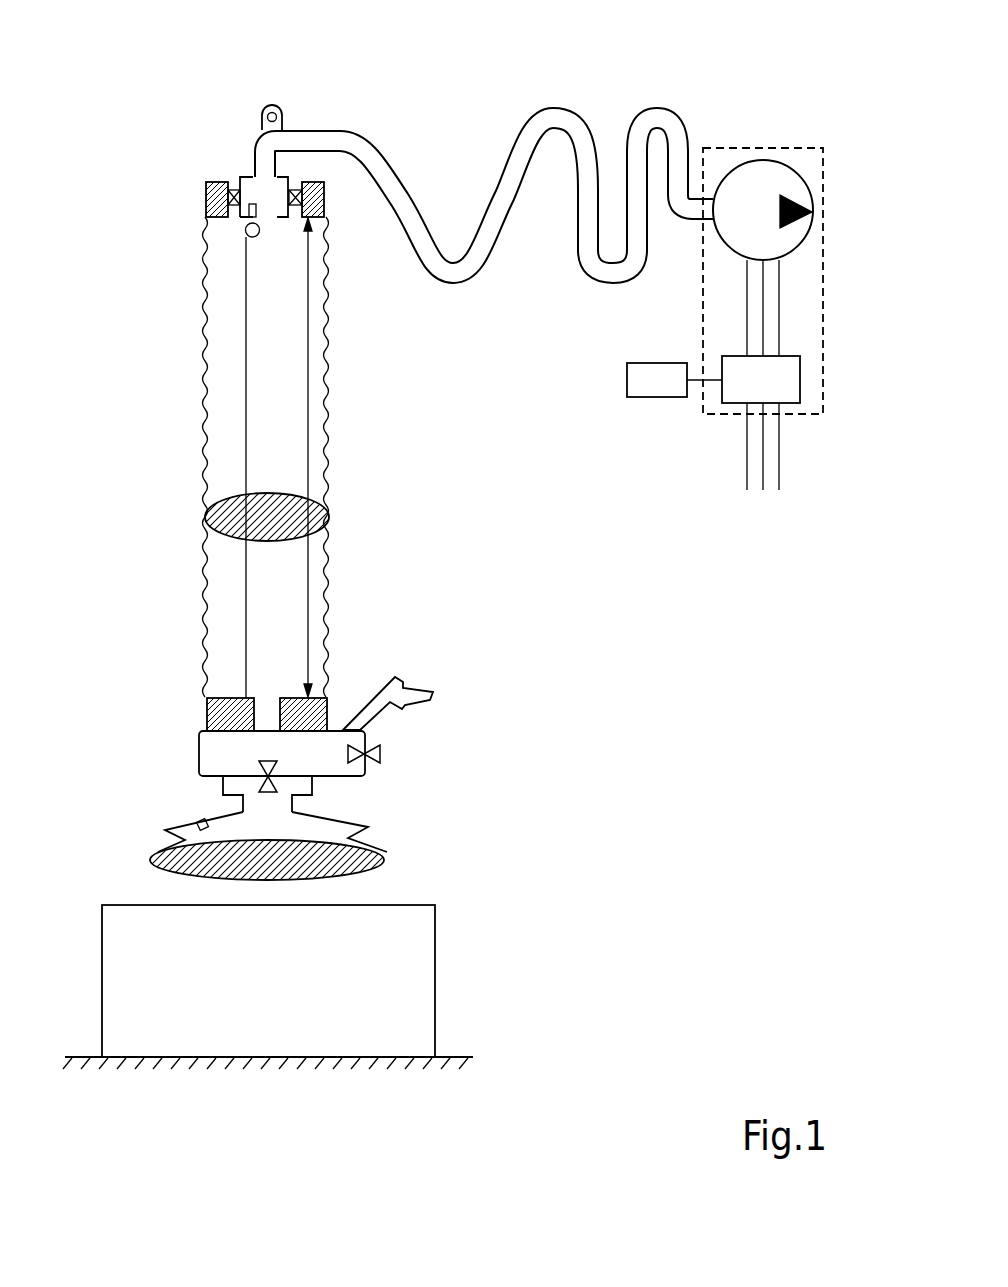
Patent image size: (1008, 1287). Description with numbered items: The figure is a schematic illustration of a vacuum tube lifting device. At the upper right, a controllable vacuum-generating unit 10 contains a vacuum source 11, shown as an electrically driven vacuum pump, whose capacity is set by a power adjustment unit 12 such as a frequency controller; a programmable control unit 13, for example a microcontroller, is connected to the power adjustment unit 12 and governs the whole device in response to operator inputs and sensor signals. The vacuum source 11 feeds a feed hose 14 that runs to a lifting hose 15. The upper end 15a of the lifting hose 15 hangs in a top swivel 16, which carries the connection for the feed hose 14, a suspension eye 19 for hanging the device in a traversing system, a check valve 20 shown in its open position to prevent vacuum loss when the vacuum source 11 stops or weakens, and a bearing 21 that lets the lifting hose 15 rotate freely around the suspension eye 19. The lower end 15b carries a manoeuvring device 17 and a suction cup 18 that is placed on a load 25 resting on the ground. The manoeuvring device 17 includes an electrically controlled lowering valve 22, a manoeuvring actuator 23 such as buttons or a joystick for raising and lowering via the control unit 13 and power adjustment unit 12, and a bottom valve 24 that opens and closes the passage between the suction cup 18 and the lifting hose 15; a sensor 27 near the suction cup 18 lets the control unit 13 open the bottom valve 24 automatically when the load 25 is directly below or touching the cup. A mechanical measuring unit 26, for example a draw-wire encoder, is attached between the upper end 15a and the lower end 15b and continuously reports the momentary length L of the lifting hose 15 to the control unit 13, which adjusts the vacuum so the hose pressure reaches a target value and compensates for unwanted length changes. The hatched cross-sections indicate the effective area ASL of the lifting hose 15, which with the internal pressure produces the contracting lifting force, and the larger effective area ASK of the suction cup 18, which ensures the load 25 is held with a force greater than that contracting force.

The vacuum-generating unit 10 is at (727, 415).
The vacuum source 11 is at (760, 160).
The power adjustment unit 12 is at (788, 407).
The programmable control unit 13 is at (638, 400).
The feed hose 14 is at (567, 110).
The lifting hose 15 is at (203, 407).
The upper end of the lifting hose 15a is at (205, 218).
The lower end of the lifting hose 15b is at (207, 700).
The top swivel 16 is at (153, 105).
The manoeuvring device 17 is at (510, 660).
The suction cup 18 is at (357, 823).
The suspension eye 19 is at (280, 107).
The check valve 20 is at (268, 203).
The bearing 21 is at (235, 182).
The lowering valve 22 is at (382, 757).
The manoeuvring actuator 23 is at (405, 682).
The bottom valve 24 is at (258, 764).
The load 25 is at (254, 996).
The mechanical measuring unit 26 is at (248, 237).
The sensor 27 is at (198, 822).
The momentary length of the lifting hose L is at (308, 403).
The effective area of the lifting hose ASL is at (308, 502).
The effective area of the suction cup ASK is at (363, 870).